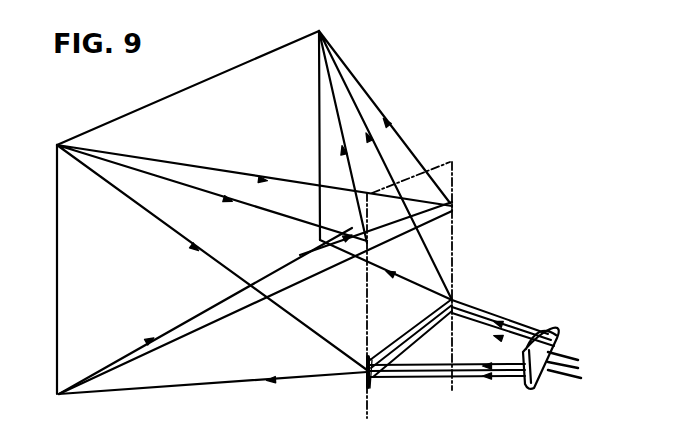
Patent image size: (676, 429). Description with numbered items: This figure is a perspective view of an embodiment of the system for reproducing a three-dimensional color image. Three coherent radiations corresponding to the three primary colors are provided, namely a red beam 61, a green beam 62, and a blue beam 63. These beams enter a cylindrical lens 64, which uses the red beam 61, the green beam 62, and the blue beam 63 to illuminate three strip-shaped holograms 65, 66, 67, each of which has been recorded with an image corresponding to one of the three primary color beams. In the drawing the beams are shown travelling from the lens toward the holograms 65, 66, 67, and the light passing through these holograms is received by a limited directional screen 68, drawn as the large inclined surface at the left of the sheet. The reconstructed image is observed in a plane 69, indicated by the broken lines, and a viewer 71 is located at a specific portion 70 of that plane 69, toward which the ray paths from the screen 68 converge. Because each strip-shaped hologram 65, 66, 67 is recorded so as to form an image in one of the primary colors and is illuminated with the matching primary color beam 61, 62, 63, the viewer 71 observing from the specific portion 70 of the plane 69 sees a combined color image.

The red beam 61 is at (580, 357).
The green beam 62 is at (583, 370).
The blue beam 63 is at (582, 378).
The cylindrical lens 64 is at (557, 336).
The strip-shaped hologram 65 is at (367, 357).
The strip-shaped hologram 66 is at (366, 380).
The strip-shaped hologram 67 is at (373, 386).
The limited directional screen 68 is at (57, 370).
The plane 69 is at (462, 171).
The specific portion 70 is at (451, 204).
The viewer 71 is at (463, 212).